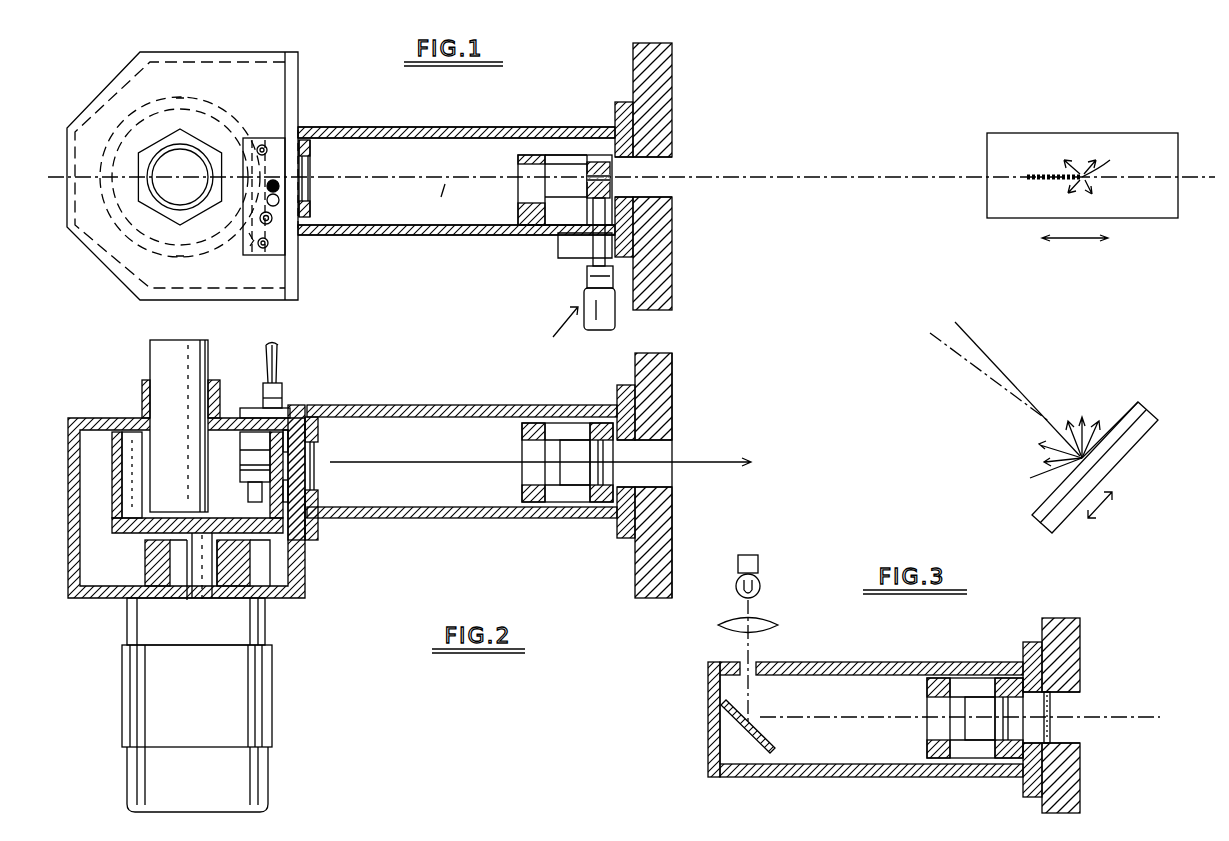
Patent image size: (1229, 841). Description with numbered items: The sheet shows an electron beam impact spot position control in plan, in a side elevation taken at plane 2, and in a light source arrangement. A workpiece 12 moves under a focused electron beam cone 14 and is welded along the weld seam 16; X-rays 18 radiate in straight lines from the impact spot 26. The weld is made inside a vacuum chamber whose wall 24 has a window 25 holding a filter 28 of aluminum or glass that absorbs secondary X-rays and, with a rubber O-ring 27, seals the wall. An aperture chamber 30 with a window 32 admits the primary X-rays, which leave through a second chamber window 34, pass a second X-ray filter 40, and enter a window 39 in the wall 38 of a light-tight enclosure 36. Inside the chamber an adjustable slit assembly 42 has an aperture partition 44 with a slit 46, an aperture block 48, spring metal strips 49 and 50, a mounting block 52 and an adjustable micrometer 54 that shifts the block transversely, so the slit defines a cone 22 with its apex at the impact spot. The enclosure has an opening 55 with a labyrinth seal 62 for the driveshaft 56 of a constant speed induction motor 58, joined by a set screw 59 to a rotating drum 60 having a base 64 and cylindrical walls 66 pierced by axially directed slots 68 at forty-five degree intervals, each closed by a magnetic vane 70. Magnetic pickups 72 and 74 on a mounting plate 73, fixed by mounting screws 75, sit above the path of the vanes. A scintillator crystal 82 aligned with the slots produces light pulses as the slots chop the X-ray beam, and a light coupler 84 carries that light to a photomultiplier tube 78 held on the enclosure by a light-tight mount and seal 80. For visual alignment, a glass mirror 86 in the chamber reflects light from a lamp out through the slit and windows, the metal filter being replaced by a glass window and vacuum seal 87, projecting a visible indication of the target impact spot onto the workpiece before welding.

In FIG. 1, the section plane 2 is at (57, 190).
In FIG. 1, the workpiece 12 is at (1025, 209).
In FIG. 3, the workpiece 12 is at (1068, 507).
In FIG. 3, the focused electron beam cone 14 is at (1020, 390).
In FIG. 1, the weld seam 16 is at (1057, 170).
In FIG. 1, the X-rays 18 is at (1080, 189).
In FIG. 3, the X-rays 18 is at (1070, 466).
In FIG. 1, the cone 22 is at (438, 202).
In FIG. 1, the vacuum chamber wall 24 is at (673, 93).
In FIG. 2, the vacuum chamber wall 24 is at (673, 376).
In FIG. 3, the vacuum chamber wall 24 is at (1078, 640).
In FIG. 1, the window 25 is at (660, 158).
In FIG. 2, the window 25 is at (663, 436).
In FIG. 3, the window 25 is at (1075, 738).
In FIG. 1, the impact spot 26 is at (1086, 175).
In FIG. 3, the impact spot 26 is at (1105, 473).
In FIG. 2, the rubber O-ring 27 is at (672, 503).
In FIG. 1, the filter 28 is at (665, 198).
In FIG. 2, the filter 28 is at (670, 477).
In FIG. 1, the aperture chamber 30 is at (445, 127).
In FIG. 2, the aperture chamber 30 is at (445, 518).
In FIG. 3, the aperture chamber 30 is at (907, 663).
In FIG. 1, the window 32 is at (617, 160).
In FIG. 2, the window 32 is at (640, 440).
In FIG. 3, the window 32 is at (1043, 702).
In FIG. 1, the second chamber window 34 is at (311, 162).
In FIG. 2, the second chamber window 34 is at (318, 474).
In FIG. 3, the second chamber window 34 is at (708, 742).
In FIG. 1, the enclosure 36 is at (124, 287).
In FIG. 2, the enclosure 36 is at (99, 600).
In FIG. 1, the wall 38 is at (288, 84).
In FIG. 2, the wall 38 is at (289, 414).
In FIG. 1, the window 39 is at (300, 132).
In FIG. 2, the window 39 is at (309, 452).
In FIG. 1, the second X-ray filter 40 is at (406, 183).
In FIG. 2, the second X-ray filter 40 is at (320, 469).
In FIG. 1, the adjustable slit assembly 42 is at (505, 196).
In FIG. 2, the adjustable slit assembly 42 is at (513, 482).
In FIG. 1, the aperture partition 44 is at (598, 198).
In FIG. 2, the aperture partition 44 is at (604, 433).
In FIG. 3, the aperture partition 44 is at (1000, 684).
In FIG. 1, the slit 46 is at (590, 176).
In FIG. 2, the slit 46 is at (594, 450).
In FIG. 3, the slit 46 is at (1002, 703).
In FIG. 1, the aperture block 48 is at (519, 163).
In FIG. 2, the aperture block 48 is at (522, 436).
In FIG. 3, the aperture block 48 is at (928, 690).
In FIG. 1, the spring metal strip 49 is at (548, 154).
In FIG. 1, the spring metal strip 50 is at (548, 204).
In FIG. 1, the mounting block 52 is at (519, 211).
In FIG. 1, the adjustable micrometer 54 is at (563, 332).
In FIG. 2, the opening 55 is at (183, 598).
In FIG. 2, the driveshaft 56 is at (194, 600).
In FIG. 2, the constant speed induction motor 58 is at (128, 713).
In FIG. 2, the set screw 59 is at (188, 565).
In FIG. 1, the rotating drum 60 is at (248, 138).
In FIG. 2, the rotating drum 60 is at (252, 540).
In FIG. 2, the labyrinth seal 62 is at (146, 550).
In FIG. 2, the base 64 is at (284, 540).
In FIG. 2, the cylindrical walls 66 is at (122, 508).
In FIG. 1, the axially directed slots 68 is at (120, 177).
In FIG. 2, the axially directed slots 68 is at (113, 480).
In FIG. 2, the magnetic vane 70 is at (300, 427).
In FIG. 1, the magnetic pickup 72 is at (311, 210).
In FIG. 1, the mounting plate 73 is at (268, 225).
In FIG. 2, the mounting plate 73 is at (243, 412).
In FIG. 1, the magnetic pickup 74 is at (275, 206).
In FIG. 2, the magnetic pickup 74 is at (263, 392).
In FIG. 1, the mounting screws 75 is at (267, 146).
In FIG. 1, the photomultiplier tube 78 is at (193, 162).
In FIG. 2, the photomultiplier tube 78 is at (190, 357).
In FIG. 2, the light-tight mount and seal 80 is at (142, 412).
In FIG. 1, the scintillator crystal 82 is at (264, 145).
In FIG. 2, the scintillator crystal 82 is at (249, 484).
In FIG. 1, the light coupler 84 is at (201, 207).
In FIG. 2, the light coupler 84 is at (243, 457).
In FIG. 3, the glass mirror 86 is at (773, 744).
In FIG. 3, the glass window and vacuum seal 87 is at (1052, 722).